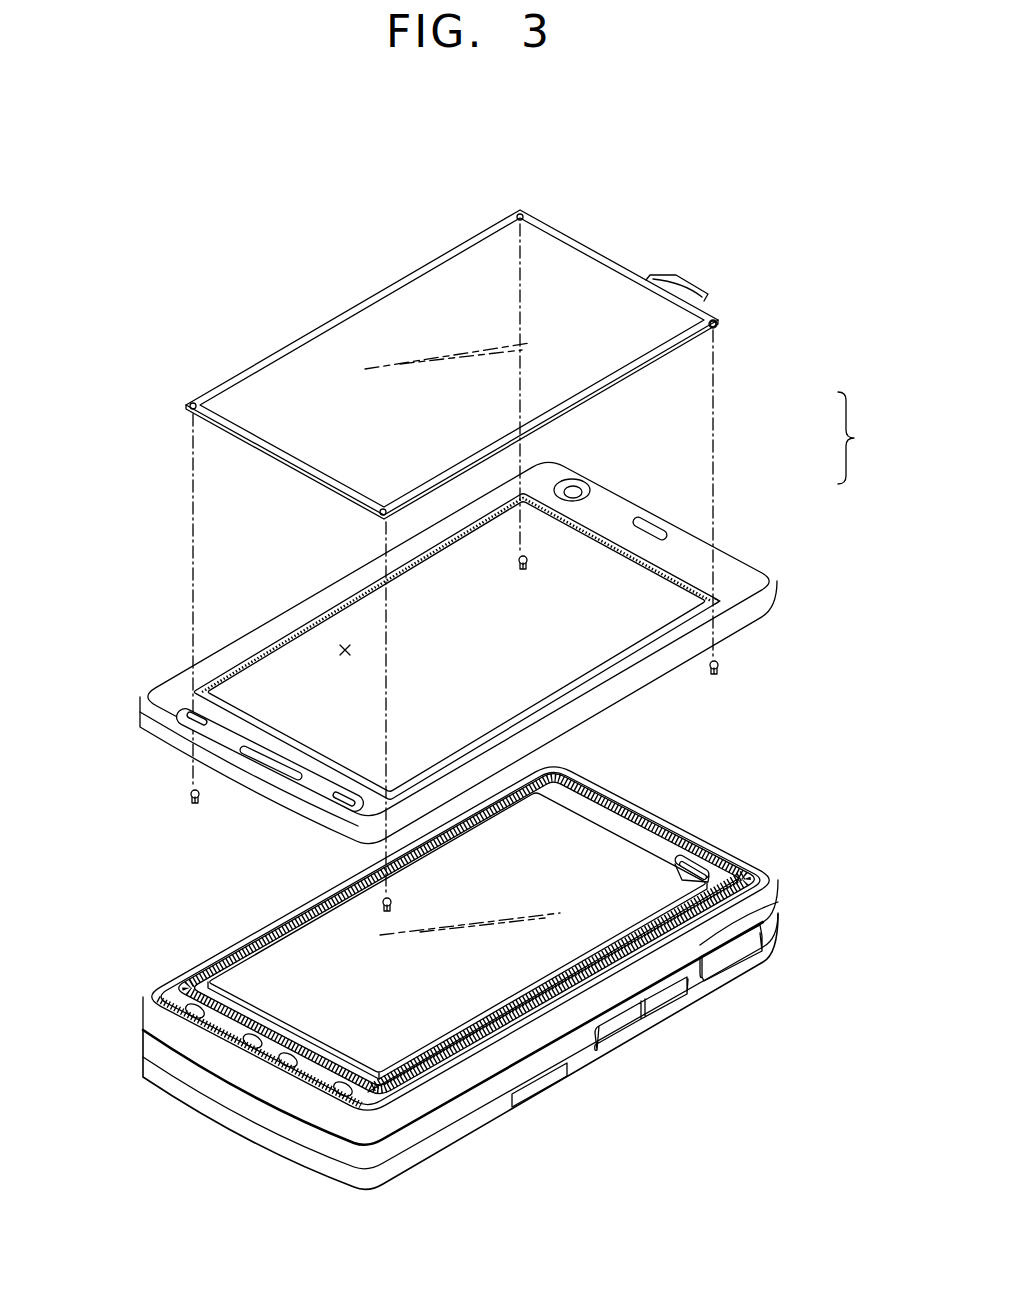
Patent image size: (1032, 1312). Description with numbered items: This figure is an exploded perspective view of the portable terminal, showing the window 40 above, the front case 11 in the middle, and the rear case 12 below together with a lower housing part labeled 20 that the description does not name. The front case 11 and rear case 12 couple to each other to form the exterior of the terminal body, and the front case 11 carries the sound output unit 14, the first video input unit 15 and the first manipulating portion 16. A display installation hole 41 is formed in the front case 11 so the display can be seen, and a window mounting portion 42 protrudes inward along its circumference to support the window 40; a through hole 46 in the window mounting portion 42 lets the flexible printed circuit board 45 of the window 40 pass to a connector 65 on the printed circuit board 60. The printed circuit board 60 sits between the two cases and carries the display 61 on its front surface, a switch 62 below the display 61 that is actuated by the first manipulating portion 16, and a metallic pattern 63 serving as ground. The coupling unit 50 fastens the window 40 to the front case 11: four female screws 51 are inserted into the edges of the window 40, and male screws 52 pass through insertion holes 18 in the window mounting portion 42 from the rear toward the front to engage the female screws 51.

The front case 11 is at (768, 598).
The rear case 12 is at (775, 898).
The sound output unit 14 is at (651, 526).
The first video input unit 15 is at (574, 491).
The first manipulating portion 16 is at (170, 710).
The insertion hole 18 is at (712, 610).
The rear body 20 is at (129, 1051).
The window 40 is at (585, 283).
The display installation hole 41 is at (345, 650).
The window mounting portion 42 is at (237, 673).
The flexible printed circuit board 45 is at (680, 278).
The through hole 46 is at (682, 583).
The coupling unit 50 is at (859, 438).
The female screw 51 is at (718, 327).
The male screw 52 is at (720, 660).
The printed circuit board 60 is at (665, 848).
The display 61 is at (640, 905).
The switch 62 is at (193, 1005).
The metallic pattern 63 is at (385, 1095).
The connector 65 is at (710, 865).